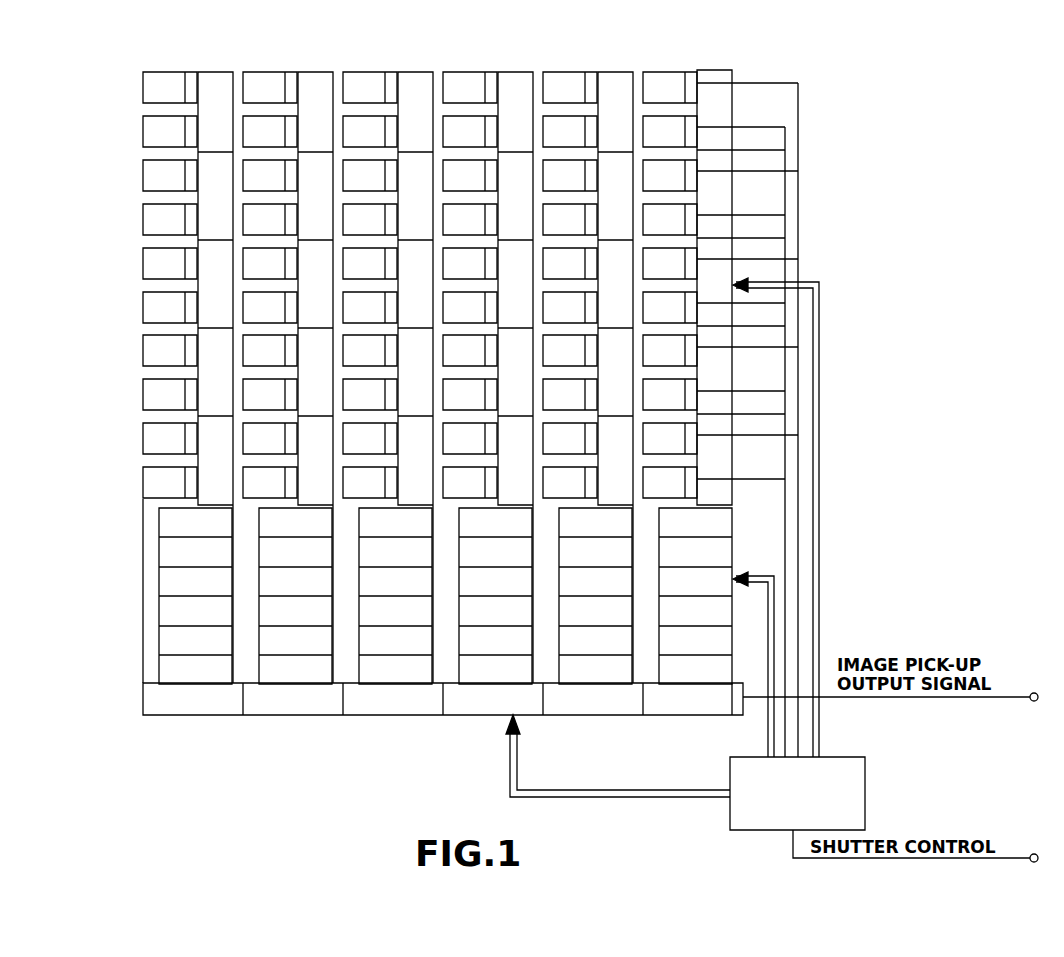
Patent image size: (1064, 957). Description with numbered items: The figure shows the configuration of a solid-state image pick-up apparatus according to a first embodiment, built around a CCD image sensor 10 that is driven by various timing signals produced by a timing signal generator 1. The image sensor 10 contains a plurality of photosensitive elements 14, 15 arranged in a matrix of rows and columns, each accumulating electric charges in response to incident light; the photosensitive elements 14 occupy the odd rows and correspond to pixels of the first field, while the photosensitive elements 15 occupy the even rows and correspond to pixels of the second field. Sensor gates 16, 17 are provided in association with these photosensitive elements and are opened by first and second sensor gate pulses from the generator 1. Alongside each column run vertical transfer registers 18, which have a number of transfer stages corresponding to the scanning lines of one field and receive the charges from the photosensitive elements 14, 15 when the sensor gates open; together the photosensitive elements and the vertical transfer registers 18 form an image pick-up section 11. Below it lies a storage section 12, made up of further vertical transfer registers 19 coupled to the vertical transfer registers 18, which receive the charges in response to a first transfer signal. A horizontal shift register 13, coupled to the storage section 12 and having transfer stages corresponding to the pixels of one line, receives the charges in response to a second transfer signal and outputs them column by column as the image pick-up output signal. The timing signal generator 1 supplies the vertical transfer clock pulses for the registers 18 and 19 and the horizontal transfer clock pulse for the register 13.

The CCD image sensor 10 is at (705, 65).
The image pick-up section 11 is at (98, 497).
The storage section 12 is at (98, 512).
The horizontal shift register 13 is at (188, 706).
The photosensitive elements 14 is at (184, 167).
The photosensitive elements 15 is at (388, 210).
The sensor gate 16 is at (293, 170).
The sensor gate 17 is at (590, 124).
The vertical transfer register 18 is at (528, 72).
The vertical transfer register 19 is at (720, 548).
The timing signal generator 1 is at (867, 775).